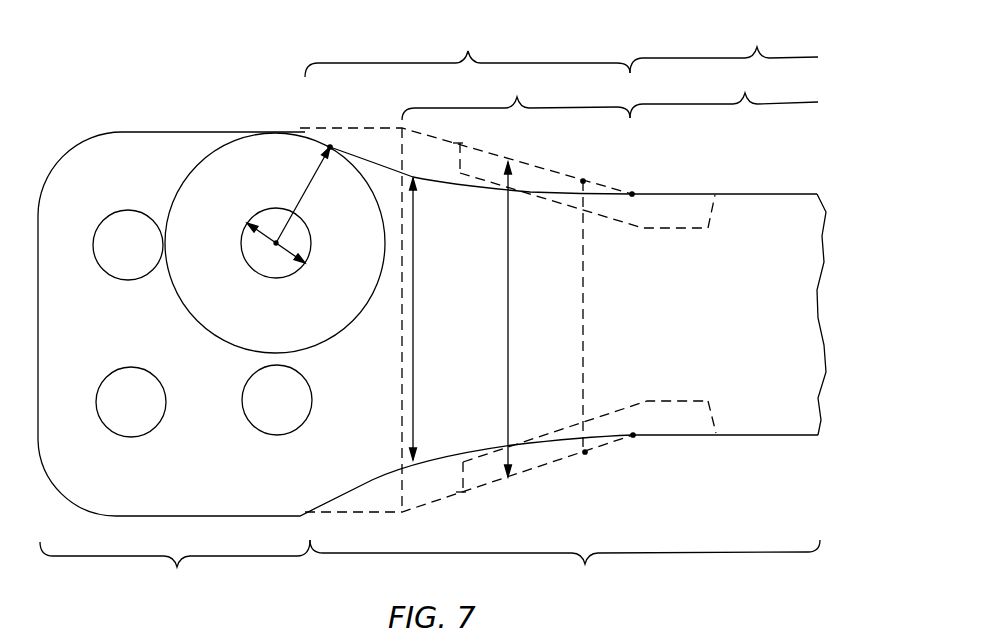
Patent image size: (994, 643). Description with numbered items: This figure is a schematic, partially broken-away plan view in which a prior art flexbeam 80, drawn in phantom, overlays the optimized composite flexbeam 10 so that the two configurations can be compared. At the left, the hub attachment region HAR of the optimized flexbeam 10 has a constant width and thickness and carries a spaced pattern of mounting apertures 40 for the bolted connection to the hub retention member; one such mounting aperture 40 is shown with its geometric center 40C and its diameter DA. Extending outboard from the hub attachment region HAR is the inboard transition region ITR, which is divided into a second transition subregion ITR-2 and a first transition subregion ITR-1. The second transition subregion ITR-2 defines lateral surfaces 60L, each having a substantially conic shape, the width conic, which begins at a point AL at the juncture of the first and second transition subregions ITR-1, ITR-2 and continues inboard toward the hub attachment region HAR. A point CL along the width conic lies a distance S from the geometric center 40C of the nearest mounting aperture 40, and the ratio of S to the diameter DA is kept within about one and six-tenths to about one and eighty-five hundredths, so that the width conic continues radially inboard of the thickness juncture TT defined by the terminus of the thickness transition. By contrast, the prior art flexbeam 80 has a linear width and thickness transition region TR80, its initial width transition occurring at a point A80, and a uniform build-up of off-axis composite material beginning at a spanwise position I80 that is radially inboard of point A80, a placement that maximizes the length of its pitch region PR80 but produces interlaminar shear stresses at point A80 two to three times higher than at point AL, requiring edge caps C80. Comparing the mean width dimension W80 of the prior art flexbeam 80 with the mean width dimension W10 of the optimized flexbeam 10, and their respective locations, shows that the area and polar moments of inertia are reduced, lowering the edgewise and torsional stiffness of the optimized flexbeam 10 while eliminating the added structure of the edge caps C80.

The optimized composite flexbeam 10 is at (763, 346).
The mounting aperture 40 is at (298, 276).
The geometric center of mounting aperture 40C is at (276, 243).
The lateral surface 60L is at (458, 187).
The prior art flexbeam 80 is at (540, 470).
The distance from point C_L to aperture center S is at (308, 186).
The mounting aperture diameter DA is at (276, 248).
The point along the width conic CL is at (330, 147).
The mean width dimension of optimized flexbeam W10 is at (442, 319).
The mean width dimension of prior art flexbeam W80 is at (535, 319).
The thickness juncture TT is at (403, 393).
The spanwise position of off-axis material build-up I80 is at (583, 181).
The initiation point of width conic AL is at (632, 194).
The initial width transition point of prior art flexbeam A80 is at (632, 194).
The edge cap C80 is at (694, 399).
The second transition subregion ITR-2 is at (467, 53).
The first transition subregion ITR-1 is at (724, 48).
The linear width and thickness transition region TR80 is at (516, 97).
The pitch region of prior art flexbeam PR80 is at (724, 94).
The hub attachment region HAR is at (175, 569).
The inboard transition region ITR is at (565, 569).